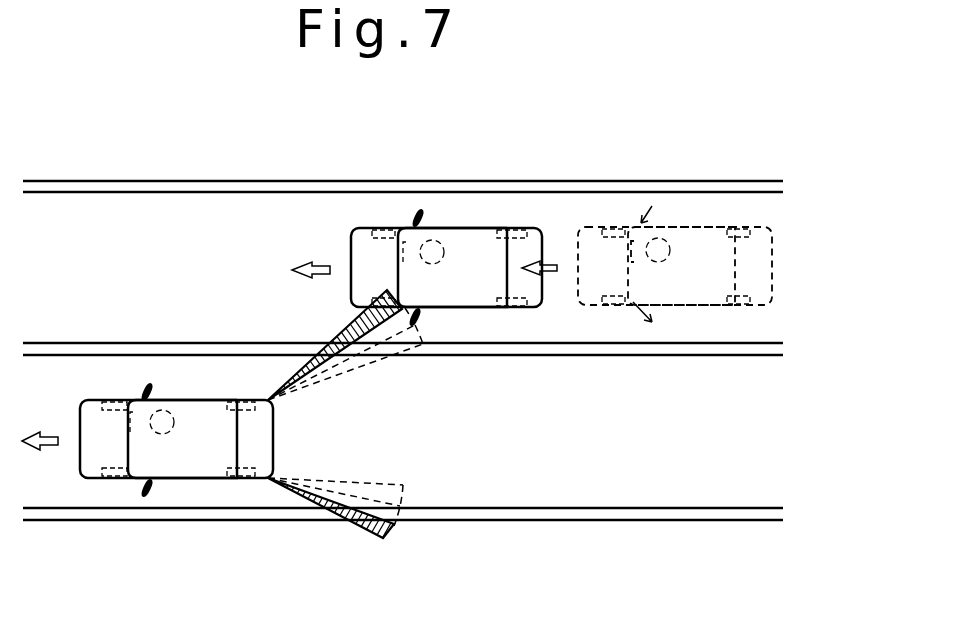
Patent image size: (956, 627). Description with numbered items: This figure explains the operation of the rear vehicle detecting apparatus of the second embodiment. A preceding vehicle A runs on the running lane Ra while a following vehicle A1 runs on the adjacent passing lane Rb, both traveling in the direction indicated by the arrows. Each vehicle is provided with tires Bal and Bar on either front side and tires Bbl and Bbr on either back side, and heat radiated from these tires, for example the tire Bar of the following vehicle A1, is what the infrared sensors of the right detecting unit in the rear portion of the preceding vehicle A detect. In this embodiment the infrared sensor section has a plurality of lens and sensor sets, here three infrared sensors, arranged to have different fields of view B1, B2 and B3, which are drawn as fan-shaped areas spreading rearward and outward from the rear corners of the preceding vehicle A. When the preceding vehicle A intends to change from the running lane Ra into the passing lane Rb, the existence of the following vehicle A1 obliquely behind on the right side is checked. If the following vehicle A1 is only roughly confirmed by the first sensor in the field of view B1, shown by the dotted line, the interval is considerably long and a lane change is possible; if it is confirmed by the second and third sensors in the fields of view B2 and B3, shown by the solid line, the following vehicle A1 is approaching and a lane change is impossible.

The preceding vehicle A is at (90, 400).
The following vehicle A1 is at (358, 228).
The right front tire Bar is at (383, 230).
The right rear tire Bbr is at (510, 230).
The left front tire Bal is at (386, 307).
The left rear tire Bbl is at (426, 386).
The first field of view B1 is at (423, 344).
The second field of view B2 is at (352, 348).
The third field of view B3 is at (333, 332).
The running lane Ra is at (431, 431).
The passing lane Rb is at (431, 232).